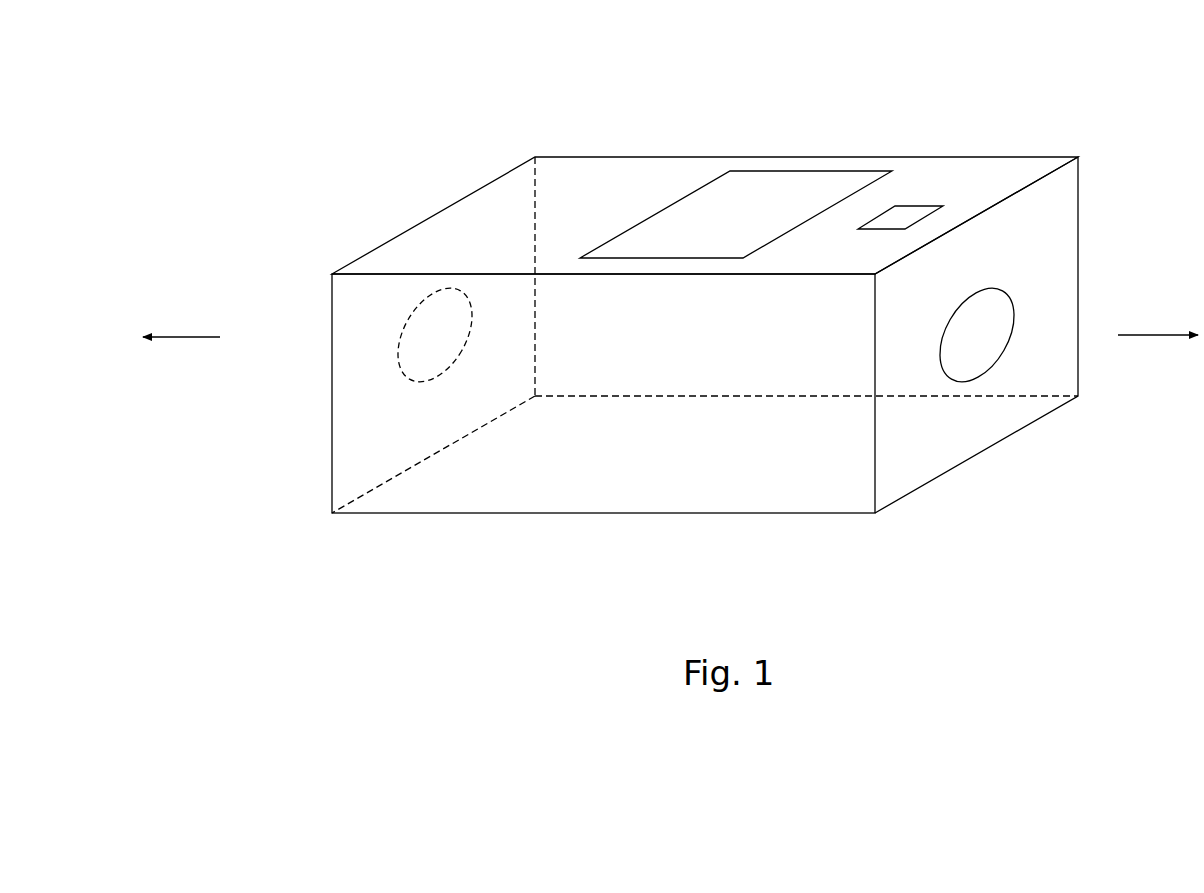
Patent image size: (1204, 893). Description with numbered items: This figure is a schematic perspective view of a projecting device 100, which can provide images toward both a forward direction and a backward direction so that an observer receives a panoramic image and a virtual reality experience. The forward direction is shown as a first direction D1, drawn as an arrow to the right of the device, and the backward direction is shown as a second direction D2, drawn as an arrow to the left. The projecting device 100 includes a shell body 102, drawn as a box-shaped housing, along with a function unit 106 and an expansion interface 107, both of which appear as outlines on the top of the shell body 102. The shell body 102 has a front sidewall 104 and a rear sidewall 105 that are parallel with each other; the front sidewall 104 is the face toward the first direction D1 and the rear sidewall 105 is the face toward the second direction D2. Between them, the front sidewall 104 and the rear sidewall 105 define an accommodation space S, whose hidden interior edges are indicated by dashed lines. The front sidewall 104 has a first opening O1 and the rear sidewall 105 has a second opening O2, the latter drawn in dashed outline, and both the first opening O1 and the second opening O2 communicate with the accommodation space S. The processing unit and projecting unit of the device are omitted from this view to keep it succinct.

The projecting device 100 is at (293, 67).
The shell body 102 is at (1003, 175).
The front sidewall 104 is at (1055, 205).
The rear sidewall 105 is at (370, 454).
The function unit 106 is at (912, 213).
The expansion interface 107 is at (790, 188).
The first opening O1 is at (1007, 288).
The second opening O2 is at (398, 342).
The accommodation space S is at (627, 455).
The first direction D1 is at (1150, 335).
The second direction D2 is at (188, 338).